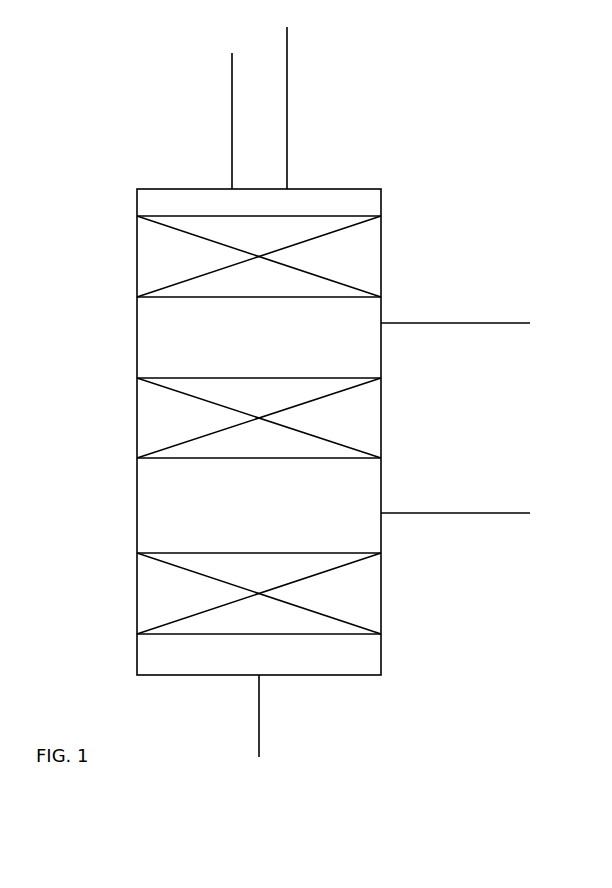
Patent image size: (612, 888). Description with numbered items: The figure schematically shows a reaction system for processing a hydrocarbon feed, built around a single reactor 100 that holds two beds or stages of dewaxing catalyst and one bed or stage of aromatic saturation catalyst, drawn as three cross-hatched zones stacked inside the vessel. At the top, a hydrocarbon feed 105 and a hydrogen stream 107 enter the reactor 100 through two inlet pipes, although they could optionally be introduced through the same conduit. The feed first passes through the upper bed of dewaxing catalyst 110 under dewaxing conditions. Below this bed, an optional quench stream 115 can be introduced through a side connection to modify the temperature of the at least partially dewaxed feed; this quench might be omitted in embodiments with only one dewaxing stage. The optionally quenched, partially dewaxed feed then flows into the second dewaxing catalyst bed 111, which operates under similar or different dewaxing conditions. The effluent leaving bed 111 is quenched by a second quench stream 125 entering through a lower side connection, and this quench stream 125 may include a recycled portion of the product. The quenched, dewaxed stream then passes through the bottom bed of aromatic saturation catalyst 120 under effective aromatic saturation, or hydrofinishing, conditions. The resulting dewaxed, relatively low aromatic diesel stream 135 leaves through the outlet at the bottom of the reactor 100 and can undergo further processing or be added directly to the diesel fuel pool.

The reactor 100 is at (392, 364).
The hydrocarbon feed 105 is at (206, 108).
The hydrogen stream 107 is at (306, 108).
The dewaxing catalyst 110 is at (125, 242).
The second dewaxing catalyst bed 111 is at (125, 412).
The quench stream 115 is at (434, 298).
The aromatic saturation catalyst 120 is at (125, 593).
The quench stream 125 is at (483, 487).
The product stream 135 is at (299, 728).